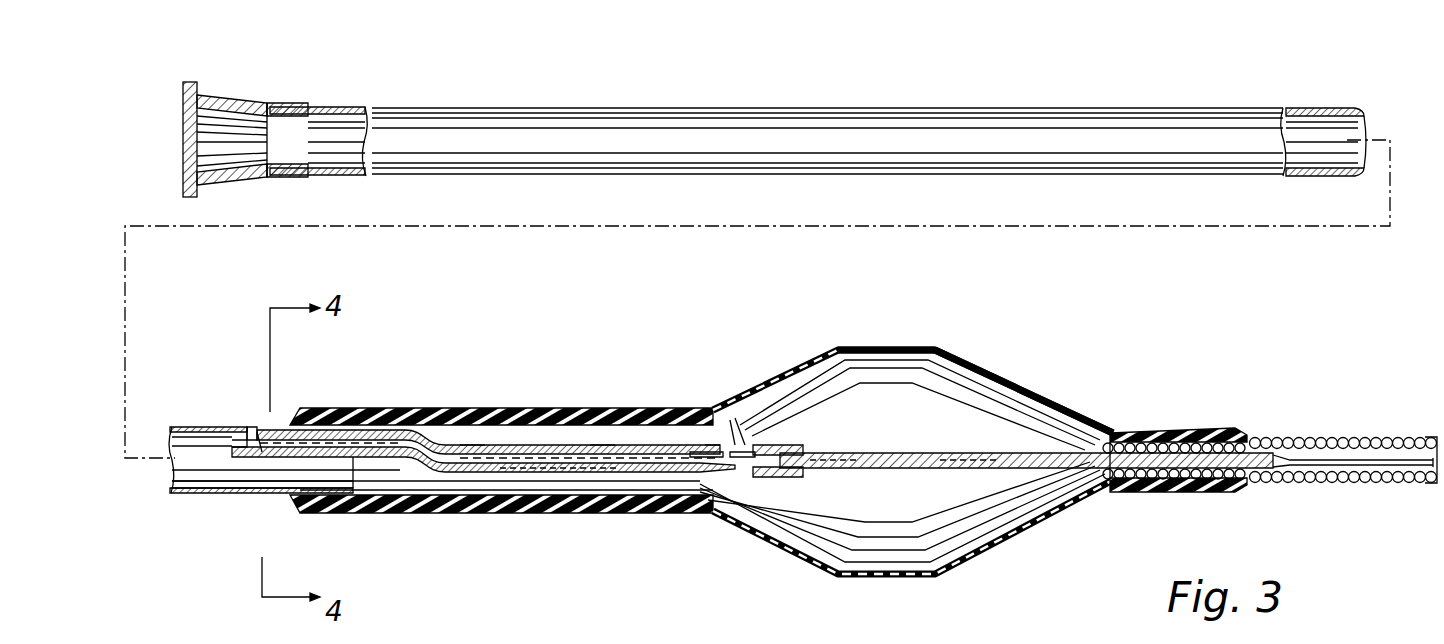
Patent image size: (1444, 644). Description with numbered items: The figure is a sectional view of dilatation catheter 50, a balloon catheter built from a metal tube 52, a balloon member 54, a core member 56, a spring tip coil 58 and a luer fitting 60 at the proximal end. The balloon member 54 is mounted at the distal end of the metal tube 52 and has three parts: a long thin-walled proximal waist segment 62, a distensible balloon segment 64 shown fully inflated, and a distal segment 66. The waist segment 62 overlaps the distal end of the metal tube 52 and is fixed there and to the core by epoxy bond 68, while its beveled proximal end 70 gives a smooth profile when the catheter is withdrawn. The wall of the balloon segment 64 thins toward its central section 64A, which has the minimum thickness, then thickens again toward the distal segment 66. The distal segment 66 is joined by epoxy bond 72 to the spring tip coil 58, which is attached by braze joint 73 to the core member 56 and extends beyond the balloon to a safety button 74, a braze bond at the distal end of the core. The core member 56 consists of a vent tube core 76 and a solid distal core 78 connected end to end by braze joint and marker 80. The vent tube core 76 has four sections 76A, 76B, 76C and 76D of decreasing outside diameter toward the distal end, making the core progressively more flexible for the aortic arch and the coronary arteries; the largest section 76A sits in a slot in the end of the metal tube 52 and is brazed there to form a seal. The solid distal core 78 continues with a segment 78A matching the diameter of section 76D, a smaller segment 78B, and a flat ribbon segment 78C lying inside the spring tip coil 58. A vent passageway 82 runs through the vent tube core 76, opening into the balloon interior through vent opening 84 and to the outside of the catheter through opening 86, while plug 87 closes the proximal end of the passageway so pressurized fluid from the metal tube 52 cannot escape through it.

The dilatation catheter 50 is at (800, 333).
The metal tube 52 is at (342, 106).
The balloon member 54 is at (458, 517).
The core member 56 is at (998, 450).
The spring tip coil 58 is at (1253, 435).
The luer fitting 60 is at (217, 96).
The proximal waist segment 62 is at (600, 508).
The distensible balloon segment 64 is at (758, 530).
The central section 64A is at (857, 347).
The distal segment 66 is at (1113, 483).
The epoxy bond 68 is at (347, 512).
The proximal end of waist segment 70 is at (293, 497).
The epoxy bond 72 is at (1145, 440).
The braze joint 73 is at (1177, 490).
The safety button 74 is at (1414, 440).
The vent tube core 76 is at (337, 432).
The segment of vent tube core 76A is at (267, 453).
The segment of vent tube core 76B is at (472, 447).
The segment of vent tube core 76C is at (600, 445).
The segment of vent tube core 76D is at (715, 407).
The solid distal core 78 is at (850, 453).
The segment of solid distal core 78A is at (833, 470).
The segment of solid distal core 78B is at (977, 453).
The flat ribbon segment 78C is at (1320, 467).
The braze joint and marker 80 is at (767, 448).
The vent passageway 82 is at (562, 460).
The vent opening 84 is at (738, 427).
The opening 86 is at (252, 427).
The plug 87 is at (237, 440).